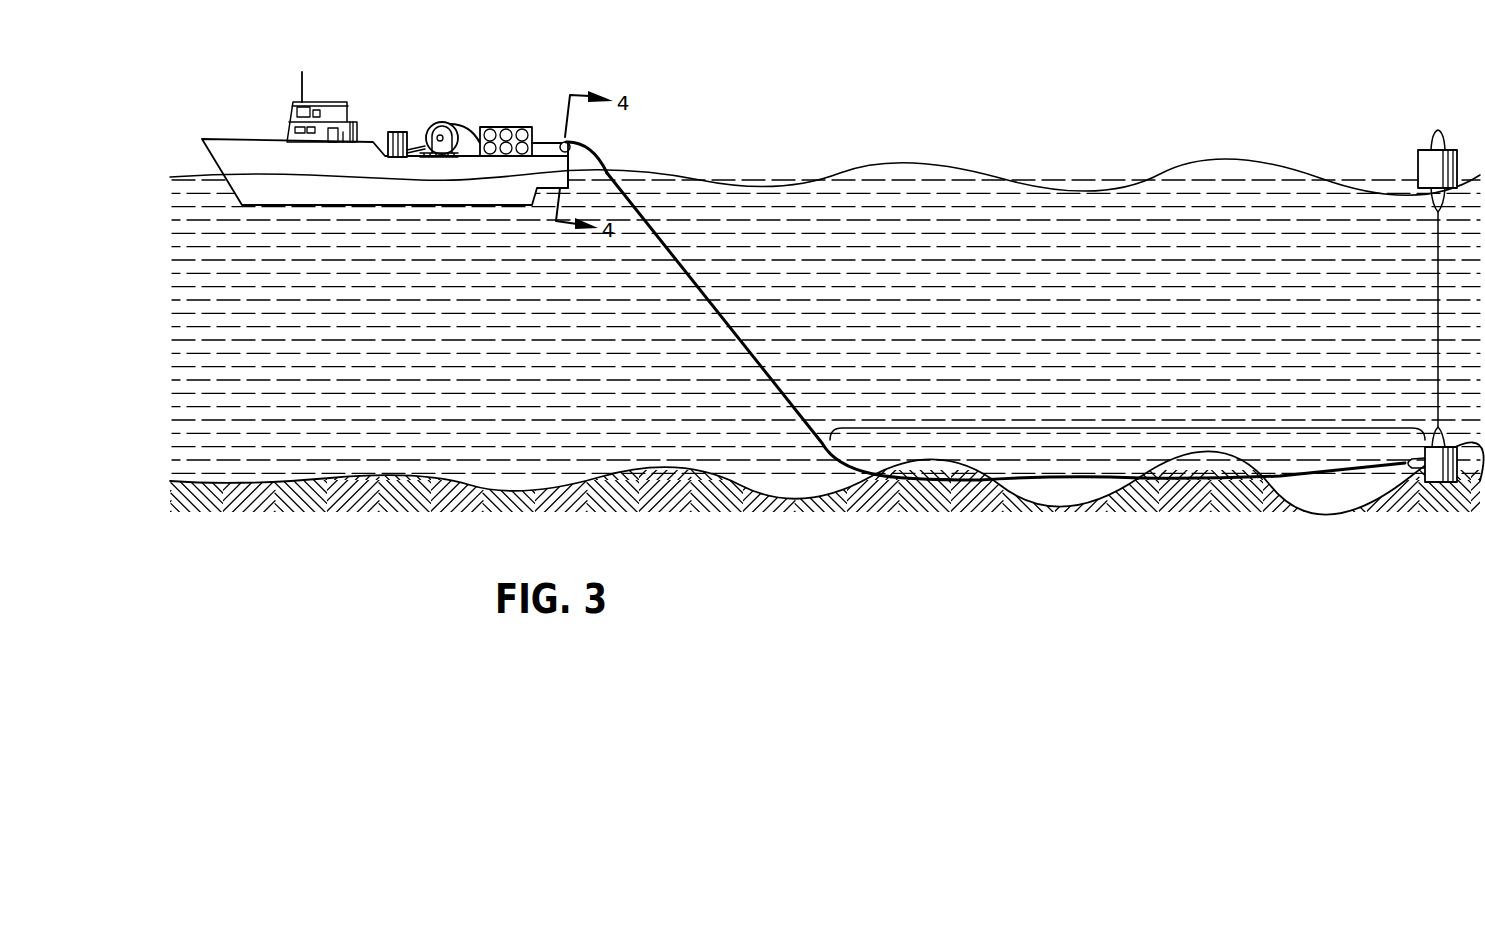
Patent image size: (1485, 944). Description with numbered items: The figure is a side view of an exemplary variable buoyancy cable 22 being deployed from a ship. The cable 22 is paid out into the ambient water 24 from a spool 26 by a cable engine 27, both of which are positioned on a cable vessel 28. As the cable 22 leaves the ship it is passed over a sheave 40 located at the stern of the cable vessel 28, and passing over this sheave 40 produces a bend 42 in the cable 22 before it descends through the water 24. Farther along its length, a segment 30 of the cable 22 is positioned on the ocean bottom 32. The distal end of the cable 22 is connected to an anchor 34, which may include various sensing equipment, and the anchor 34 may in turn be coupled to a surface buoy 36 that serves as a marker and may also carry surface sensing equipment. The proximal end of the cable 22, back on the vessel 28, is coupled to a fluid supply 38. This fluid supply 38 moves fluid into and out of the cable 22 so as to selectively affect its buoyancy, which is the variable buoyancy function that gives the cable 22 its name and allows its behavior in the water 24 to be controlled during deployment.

The variable buoyancy cable 22 is at (683, 270).
The ambient water 24 is at (910, 228).
The spool 26 is at (437, 127).
The cable engine 27 is at (503, 126).
The cable vessel 28 is at (245, 148).
The segment 30 is at (1122, 424).
The ocean bottom 32 is at (1134, 486).
The anchor 34 is at (1438, 470).
The surface buoy 36 is at (1425, 168).
The fluid supply 38 is at (400, 130).
The sheave 40 is at (561, 142).
The bend 42 is at (600, 158).